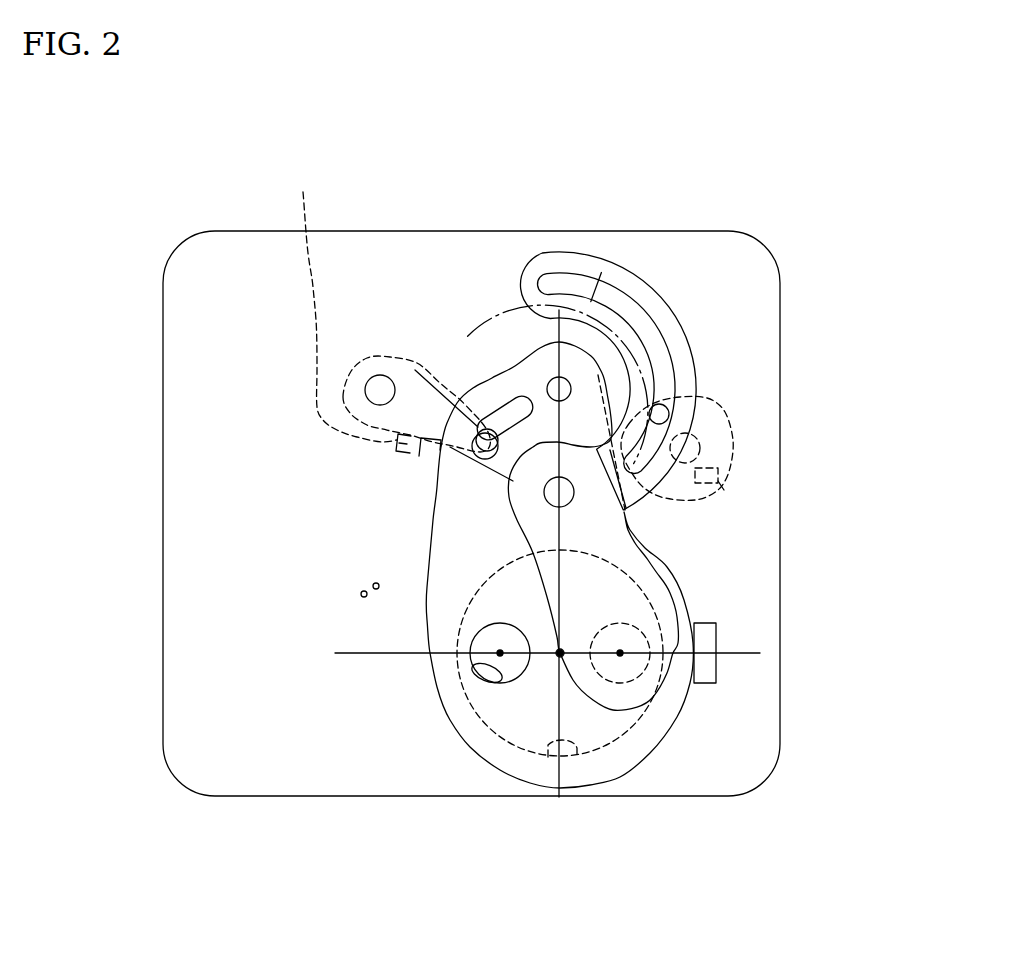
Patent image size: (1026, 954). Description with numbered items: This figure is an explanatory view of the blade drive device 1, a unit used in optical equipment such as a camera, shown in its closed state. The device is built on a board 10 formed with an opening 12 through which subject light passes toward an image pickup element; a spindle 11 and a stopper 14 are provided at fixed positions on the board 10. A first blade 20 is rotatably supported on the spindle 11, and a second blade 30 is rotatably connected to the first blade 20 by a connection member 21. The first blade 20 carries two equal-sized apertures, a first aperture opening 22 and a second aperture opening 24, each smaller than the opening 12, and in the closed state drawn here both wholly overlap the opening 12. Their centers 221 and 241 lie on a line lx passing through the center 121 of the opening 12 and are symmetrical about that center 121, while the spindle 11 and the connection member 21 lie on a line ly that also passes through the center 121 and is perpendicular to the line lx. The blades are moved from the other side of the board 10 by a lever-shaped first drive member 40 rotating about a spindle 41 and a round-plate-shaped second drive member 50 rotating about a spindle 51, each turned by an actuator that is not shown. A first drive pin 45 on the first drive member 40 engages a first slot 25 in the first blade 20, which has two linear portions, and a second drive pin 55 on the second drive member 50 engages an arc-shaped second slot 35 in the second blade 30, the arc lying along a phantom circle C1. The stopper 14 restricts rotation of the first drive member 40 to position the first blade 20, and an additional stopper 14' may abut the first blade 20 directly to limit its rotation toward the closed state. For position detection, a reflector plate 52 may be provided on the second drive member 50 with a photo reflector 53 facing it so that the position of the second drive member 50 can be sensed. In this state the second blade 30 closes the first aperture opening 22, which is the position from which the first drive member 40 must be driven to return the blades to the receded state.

The blade drive device 1 is at (578, 200).
The board 10 is at (697, 227).
The spindle 11 is at (553, 380).
The opening 12 is at (556, 760).
The center of the opening 121 is at (557, 655).
The stopper 14 is at (362, 309).
The stopper 14' is at (777, 655).
The first blade 20 is at (641, 757).
The connection member 21 is at (574, 497).
The first aperture opening 22 is at (650, 667).
The center of the first aperture opening 221 is at (620, 653).
The second aperture opening 24 is at (503, 675).
The center of the second aperture opening 241 is at (560, 653).
The first slot 25 is at (518, 402).
The second blade 30 is at (667, 300).
The second slot 35 is at (663, 347).
The first drive member 40 is at (408, 353).
The spindle of the first drive member 41 is at (380, 387).
The first drive pin 45 is at (485, 436).
The second drive member 50 is at (713, 457).
The spindle of the second drive member 51 is at (700, 433).
The reflector plate 52 is at (718, 481).
The photo reflector 53 is at (718, 477).
The second drive pin 55 is at (668, 407).
The phantom circle C1 is at (612, 250).
The line lx is at (357, 655).
The line ly is at (557, 443).